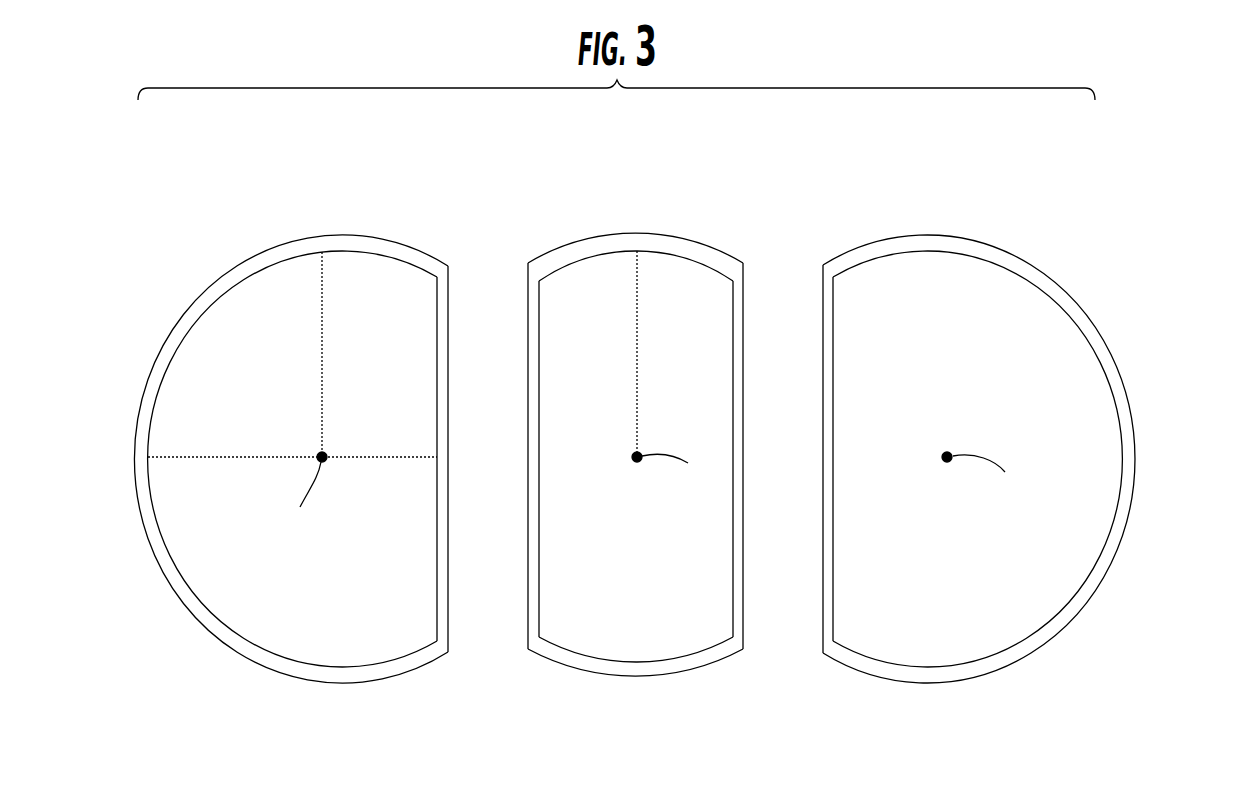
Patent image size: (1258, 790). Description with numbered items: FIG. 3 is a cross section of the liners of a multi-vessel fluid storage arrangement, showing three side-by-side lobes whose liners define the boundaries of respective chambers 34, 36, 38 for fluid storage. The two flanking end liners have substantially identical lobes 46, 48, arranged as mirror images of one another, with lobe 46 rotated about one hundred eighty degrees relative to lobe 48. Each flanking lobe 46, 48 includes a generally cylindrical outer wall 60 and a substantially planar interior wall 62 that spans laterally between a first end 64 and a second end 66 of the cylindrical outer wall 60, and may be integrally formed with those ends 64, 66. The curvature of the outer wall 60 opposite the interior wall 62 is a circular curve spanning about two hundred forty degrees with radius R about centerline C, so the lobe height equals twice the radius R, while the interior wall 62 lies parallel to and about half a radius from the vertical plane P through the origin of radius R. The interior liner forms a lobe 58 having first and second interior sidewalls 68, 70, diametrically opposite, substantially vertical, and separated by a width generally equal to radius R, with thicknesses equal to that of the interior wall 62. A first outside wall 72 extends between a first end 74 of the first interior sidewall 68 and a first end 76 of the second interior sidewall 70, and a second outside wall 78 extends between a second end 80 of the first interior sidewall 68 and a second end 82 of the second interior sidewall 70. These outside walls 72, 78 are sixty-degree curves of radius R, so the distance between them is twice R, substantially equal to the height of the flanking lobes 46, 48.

The chamber 34 is at (330, 607).
The chamber 36 is at (957, 609).
The chamber 38 is at (654, 607).
The lobe 46 is at (218, 195).
The lobe 48 is at (1026, 193).
The lobe 58 is at (602, 182).
The cylindrical outer wall 60 is at (268, 672).
The interior wall 62 is at (438, 512).
The first end 64 is at (449, 640).
The second end 66 is at (449, 270).
The first interior sidewall 68 is at (540, 378).
The second interior sidewall 70 is at (733, 487).
The first outside wall 72 is at (633, 680).
The first end 74 is at (527, 643).
The first end 76 is at (747, 642).
The second outside wall 78 is at (660, 234).
The second end 80 is at (530, 280).
The second end 82 is at (744, 277).